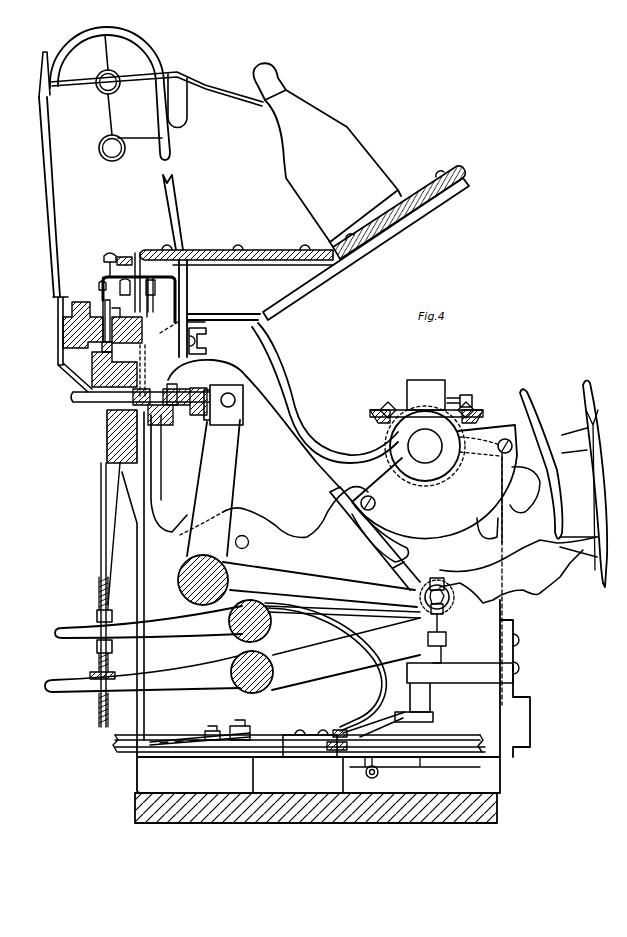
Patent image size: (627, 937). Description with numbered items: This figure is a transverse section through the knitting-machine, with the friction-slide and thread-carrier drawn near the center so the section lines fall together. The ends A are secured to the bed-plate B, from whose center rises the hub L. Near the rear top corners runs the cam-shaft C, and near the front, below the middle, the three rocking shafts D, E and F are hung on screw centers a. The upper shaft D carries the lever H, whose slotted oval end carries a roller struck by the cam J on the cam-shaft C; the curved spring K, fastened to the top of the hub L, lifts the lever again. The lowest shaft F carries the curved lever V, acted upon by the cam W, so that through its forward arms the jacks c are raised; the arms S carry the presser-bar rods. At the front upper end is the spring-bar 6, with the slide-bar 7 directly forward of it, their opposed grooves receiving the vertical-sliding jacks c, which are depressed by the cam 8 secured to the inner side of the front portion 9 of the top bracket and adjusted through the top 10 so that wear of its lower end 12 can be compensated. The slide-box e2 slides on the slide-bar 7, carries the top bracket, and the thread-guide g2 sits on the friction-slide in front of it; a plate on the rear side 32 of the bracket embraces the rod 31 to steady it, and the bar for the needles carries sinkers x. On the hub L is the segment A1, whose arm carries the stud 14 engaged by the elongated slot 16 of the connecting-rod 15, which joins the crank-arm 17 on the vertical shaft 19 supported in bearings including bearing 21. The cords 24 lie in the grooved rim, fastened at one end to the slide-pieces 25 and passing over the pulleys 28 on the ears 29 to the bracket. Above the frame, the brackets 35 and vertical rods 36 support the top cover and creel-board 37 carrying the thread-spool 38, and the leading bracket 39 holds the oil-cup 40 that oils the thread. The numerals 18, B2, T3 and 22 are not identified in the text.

The leading bracket 39 is at (151, 162).
The oil-cup 40 is at (177, 101).
The thread-spool 38 is at (359, 161).
The top cover and creel-board 37 is at (271, 246).
The brackets 35 is at (366, 249).
The vertical rods 36 is at (219, 308).
The rear side of the top bracket 32 is at (172, 336).
The rod 31 is at (198, 341).
The lower end of the cam 12 is at (199, 329).
The rail 18 is at (193, 321).
The top of the bracket 10 is at (139, 283).
The pulleys 28 is at (125, 297).
The cam 8 is at (108, 295).
The ears 29 is at (154, 295).
The slide-bar 7 is at (102, 315).
The slide-box e2 is at (83, 319).
The thread-guide g2 is at (67, 344).
The jacks c is at (117, 294).
The spring-bar 6 is at (112, 350).
The bearing 21 is at (115, 371).
The sinkers x is at (144, 398).
The front portion of the top bracket 9 is at (219, 405).
The block B2 is at (112, 436).
The threaded rod T3 is at (107, 595).
The rocking shaft F is at (130, 576).
The ends A is at (333, 558).
The bed-plate B is at (316, 799).
The hub L is at (300, 761).
The concentric segment of a wheel or pulley A1 is at (297, 745).
The stud 14 is at (200, 733).
The connecting-rod 15 is at (227, 725).
The cords 24 is at (415, 767).
The adjustable slide-piece 25 is at (380, 770).
The centers a is at (213, 488).
The rocking shaft D is at (196, 580).
The lever H is at (320, 584).
The arms S is at (237, 622).
The rocking shaft E is at (255, 621).
The curved lever V is at (232, 667).
The curved spring K is at (374, 712).
The crank-arm 17 is at (410, 724).
The vertical shaft 19 is at (460, 687).
The elongated slot 16 is at (395, 575).
The cam-shaft C is at (425, 446).
The bracket 22 is at (431, 401).
The cam J is at (474, 514).
The cam W is at (563, 483).